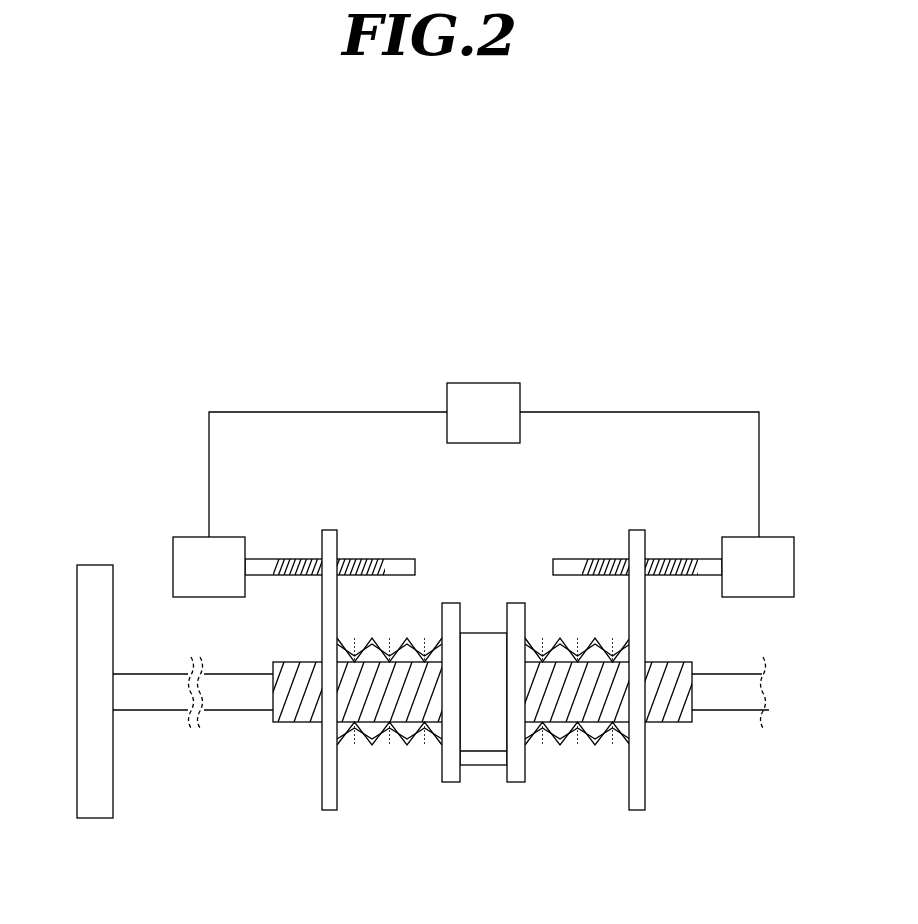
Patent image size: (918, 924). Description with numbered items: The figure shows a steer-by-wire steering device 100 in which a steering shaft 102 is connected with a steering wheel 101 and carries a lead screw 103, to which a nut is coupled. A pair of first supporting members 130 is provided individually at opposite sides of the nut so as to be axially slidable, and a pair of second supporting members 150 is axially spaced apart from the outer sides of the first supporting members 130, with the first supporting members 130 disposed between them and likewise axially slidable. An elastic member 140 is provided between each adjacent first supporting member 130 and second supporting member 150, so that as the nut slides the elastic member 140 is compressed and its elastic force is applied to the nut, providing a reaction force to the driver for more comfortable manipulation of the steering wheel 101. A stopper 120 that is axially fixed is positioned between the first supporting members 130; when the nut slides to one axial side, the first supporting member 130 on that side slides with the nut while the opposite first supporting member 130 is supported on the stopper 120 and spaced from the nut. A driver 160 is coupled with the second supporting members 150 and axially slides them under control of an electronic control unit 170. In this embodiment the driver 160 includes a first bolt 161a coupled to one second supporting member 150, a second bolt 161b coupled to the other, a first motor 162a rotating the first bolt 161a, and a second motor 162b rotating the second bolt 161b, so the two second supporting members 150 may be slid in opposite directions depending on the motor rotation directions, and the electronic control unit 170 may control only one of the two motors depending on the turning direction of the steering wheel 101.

The steer-by-wire steering device 100 is at (125, 368).
The steering wheel 101 is at (93, 573).
The steering shaft 102 is at (242, 702).
The lead screw 103 is at (300, 710).
The stopper 120 is at (517, 816).
The first supporting members 130 is at (451, 773).
The elastic member 140 is at (392, 737).
The second supporting members 150 is at (327, 807).
The driver 160 is at (614, 499).
The first bolt 161a is at (267, 563).
The second bolt 161b is at (700, 563).
The first motor 162a is at (228, 543).
The second motor 162b is at (740, 543).
The electronic control unit 170 is at (484, 393).